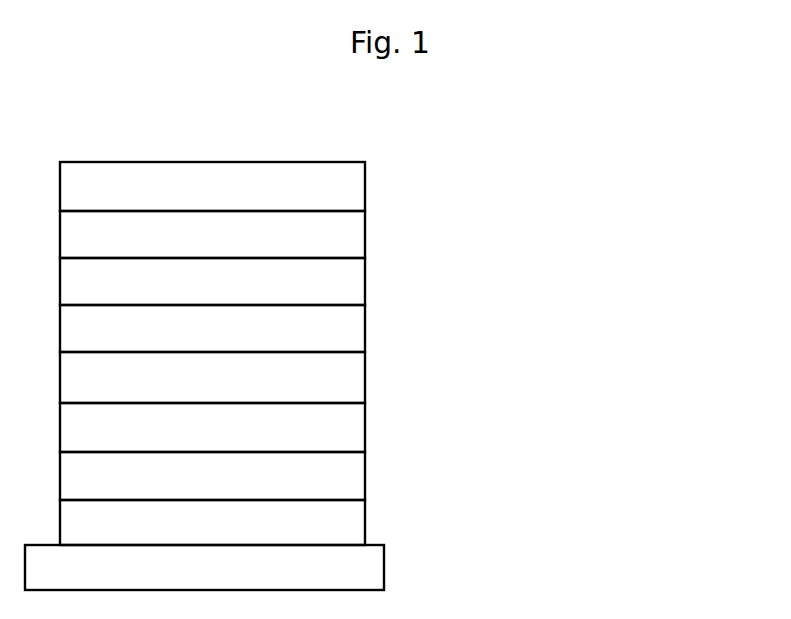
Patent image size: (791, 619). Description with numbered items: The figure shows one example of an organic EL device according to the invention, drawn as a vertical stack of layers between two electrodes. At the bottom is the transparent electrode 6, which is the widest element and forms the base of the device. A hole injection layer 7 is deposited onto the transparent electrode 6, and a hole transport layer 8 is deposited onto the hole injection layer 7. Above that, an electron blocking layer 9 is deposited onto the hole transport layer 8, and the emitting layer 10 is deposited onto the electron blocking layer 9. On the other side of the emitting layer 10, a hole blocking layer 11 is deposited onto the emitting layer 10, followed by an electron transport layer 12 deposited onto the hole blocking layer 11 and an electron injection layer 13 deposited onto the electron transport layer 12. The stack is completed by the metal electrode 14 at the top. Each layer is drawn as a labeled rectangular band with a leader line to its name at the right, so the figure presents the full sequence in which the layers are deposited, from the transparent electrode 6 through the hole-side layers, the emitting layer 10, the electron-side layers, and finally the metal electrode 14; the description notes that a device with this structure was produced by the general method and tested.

The metal electrode 14 is at (437, 188).
The electron injection layer 13 is at (437, 236).
The electron transport layer 12 is at (437, 285).
The hole blocking layer 11 is at (437, 332).
The emitting layer 10 is at (437, 380).
The electron blocking layer 9 is at (437, 428).
The hole transport layer 8 is at (437, 479).
The hole injection layer 7 is at (437, 524).
The transparent electrode 6 is at (437, 568).